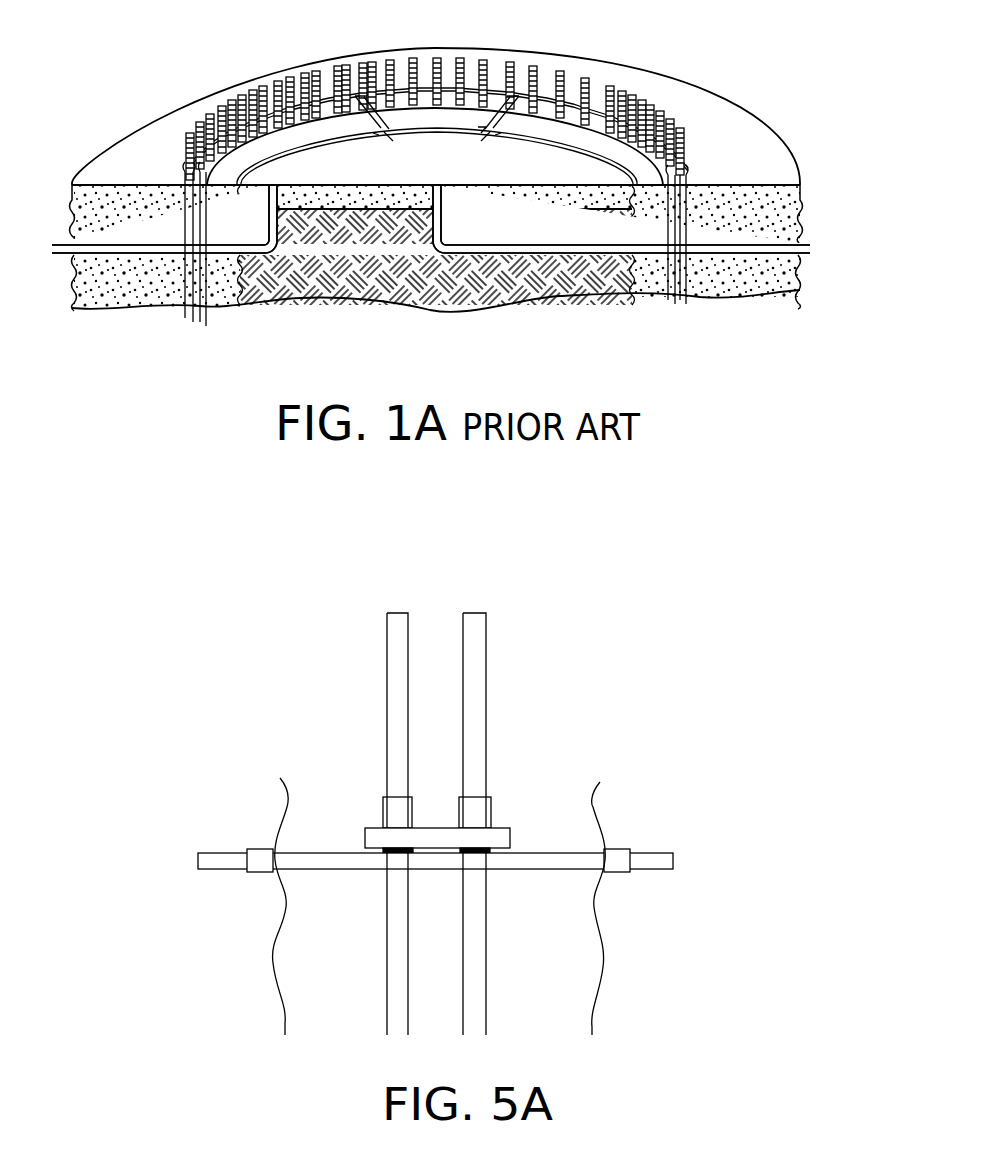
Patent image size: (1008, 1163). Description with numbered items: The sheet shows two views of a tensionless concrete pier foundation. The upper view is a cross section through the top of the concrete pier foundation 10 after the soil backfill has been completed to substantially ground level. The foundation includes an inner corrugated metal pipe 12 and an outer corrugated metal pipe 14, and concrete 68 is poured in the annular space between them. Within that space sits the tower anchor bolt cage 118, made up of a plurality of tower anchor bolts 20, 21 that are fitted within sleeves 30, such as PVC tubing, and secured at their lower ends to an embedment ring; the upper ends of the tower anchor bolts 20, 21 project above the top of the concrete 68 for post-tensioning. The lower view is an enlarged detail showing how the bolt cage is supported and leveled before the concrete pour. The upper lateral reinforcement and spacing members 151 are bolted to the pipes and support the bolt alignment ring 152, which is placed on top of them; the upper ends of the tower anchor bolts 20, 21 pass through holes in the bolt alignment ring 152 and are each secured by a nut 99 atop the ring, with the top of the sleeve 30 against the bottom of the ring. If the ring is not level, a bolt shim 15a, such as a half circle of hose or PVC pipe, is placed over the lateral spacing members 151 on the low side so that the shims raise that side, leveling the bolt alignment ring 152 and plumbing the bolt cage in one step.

In FIG. 1A, the concrete pier foundation 10 is at (740, 103).
In FIG. 1A, the inner corrugated metal pipe 12 is at (636, 291).
In FIG. 1A, the outer corrugated metal pipe 14 is at (800, 288).
In FIG. 1A, the tower anchor bolt 20 is at (241, 96).
In FIG. 5A, the tower anchor bolt 20 is at (478, 652).
In FIG. 1A, the tower anchor bolt 21 is at (231, 98).
In FIG. 5A, the tower anchor bolt 21 is at (397, 645).
In FIG. 1A, the sleeve 30 is at (207, 296).
In FIG. 1A, the concrete 68 is at (752, 220).
In FIG. 1A, the tower anchor bolt cage 118 is at (177, 320).
In FIG. 5A, the nut 99 is at (490, 802).
In FIG. 5A, the upper lateral reinforcement and spacing member 151 is at (583, 863).
In FIG. 5A, the bolt alignment ring 152 is at (510, 829).
In FIG. 5A, the bolt shim 15a is at (510, 848).